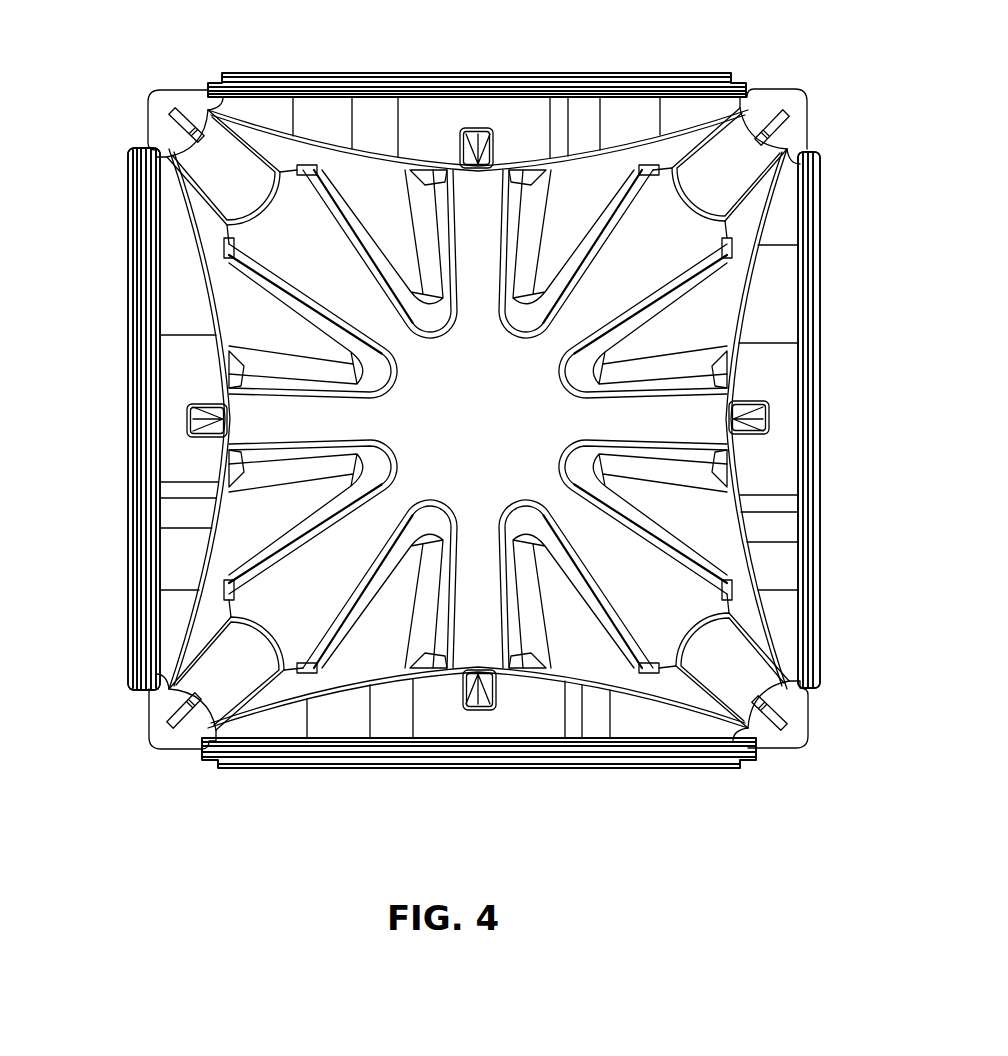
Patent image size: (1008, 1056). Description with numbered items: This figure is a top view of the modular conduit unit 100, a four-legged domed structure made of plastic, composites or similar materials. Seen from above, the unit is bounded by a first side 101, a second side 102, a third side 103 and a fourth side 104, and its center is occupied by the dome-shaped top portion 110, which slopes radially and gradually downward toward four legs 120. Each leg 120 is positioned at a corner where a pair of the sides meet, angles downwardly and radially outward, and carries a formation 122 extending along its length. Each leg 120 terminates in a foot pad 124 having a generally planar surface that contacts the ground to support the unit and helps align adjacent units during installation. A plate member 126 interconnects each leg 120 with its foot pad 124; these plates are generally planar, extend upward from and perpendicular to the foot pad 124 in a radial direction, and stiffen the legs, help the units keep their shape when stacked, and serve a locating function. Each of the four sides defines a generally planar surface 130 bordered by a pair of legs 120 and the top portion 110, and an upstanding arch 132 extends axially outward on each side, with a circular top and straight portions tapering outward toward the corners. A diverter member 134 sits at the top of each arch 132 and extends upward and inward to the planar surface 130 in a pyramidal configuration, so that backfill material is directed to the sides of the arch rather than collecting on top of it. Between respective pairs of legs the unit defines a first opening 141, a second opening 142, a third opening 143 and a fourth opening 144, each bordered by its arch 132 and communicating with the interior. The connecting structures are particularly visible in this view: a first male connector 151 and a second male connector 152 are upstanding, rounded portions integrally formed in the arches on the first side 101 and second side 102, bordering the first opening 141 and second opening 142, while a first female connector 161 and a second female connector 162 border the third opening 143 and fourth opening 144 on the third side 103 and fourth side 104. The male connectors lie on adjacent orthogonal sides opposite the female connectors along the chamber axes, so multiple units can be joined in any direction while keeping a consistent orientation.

The conduit unit 100 is at (464, 427).
The first side 101 is at (832, 642).
The second side 102 is at (709, 66).
The third side 103 is at (594, 774).
The fourth side 104 is at (123, 650).
The top portion 110 is at (465, 426).
The leg 120 is at (196, 160).
The formation 122 is at (245, 685).
The foot pad 124 is at (180, 88).
The plate member 126 is at (148, 118).
The generally planar surface 130 is at (292, 152).
The upstanding arch 132 is at (416, 112).
The diverter member 134 is at (487, 155).
The first opening 141 is at (843, 560).
The second opening 142 is at (655, 65).
The third opening 143 is at (523, 781).
The fourth opening 144 is at (122, 500).
The first male connector 151 is at (815, 456).
The second male connector 152 is at (496, 82).
The first female connector 161 is at (480, 750).
The second female connector 162 is at (148, 428).